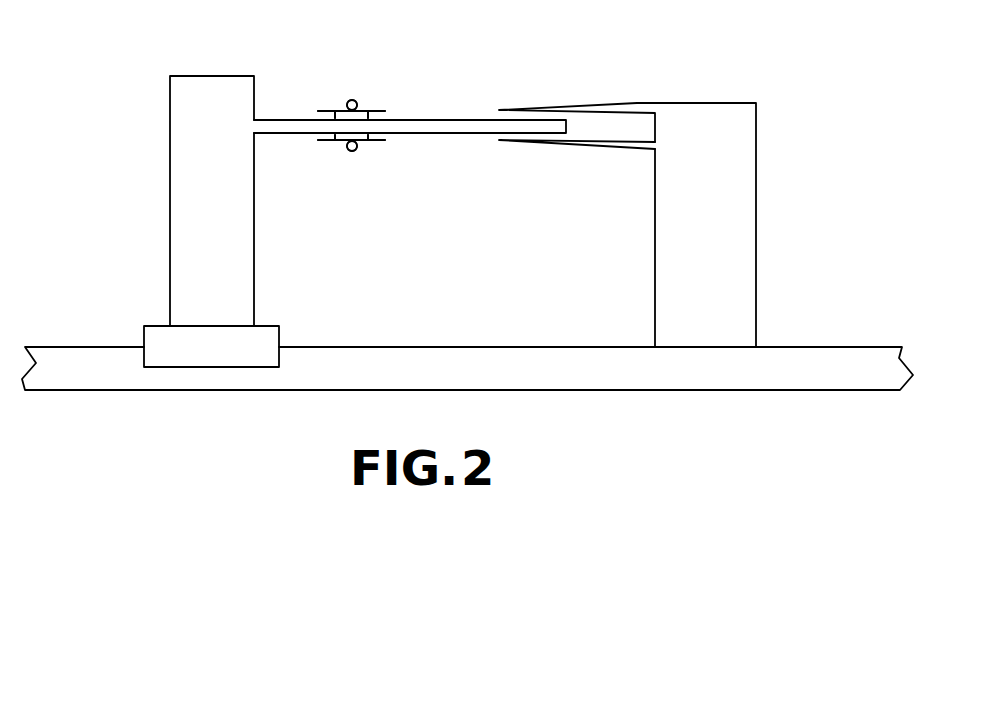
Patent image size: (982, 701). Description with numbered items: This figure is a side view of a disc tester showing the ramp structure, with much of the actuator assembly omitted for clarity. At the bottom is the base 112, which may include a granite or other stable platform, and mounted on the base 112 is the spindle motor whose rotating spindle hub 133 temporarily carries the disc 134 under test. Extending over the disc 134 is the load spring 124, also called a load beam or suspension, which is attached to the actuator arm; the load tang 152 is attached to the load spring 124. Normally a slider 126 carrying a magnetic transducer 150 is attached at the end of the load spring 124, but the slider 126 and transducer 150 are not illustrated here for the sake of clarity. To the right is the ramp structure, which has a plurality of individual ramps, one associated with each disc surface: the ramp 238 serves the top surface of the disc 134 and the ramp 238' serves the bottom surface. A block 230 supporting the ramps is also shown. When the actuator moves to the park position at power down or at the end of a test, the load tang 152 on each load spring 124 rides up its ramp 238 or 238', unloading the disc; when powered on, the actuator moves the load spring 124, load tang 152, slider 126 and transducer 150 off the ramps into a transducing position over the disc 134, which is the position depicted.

The base 112 is at (785, 347).
The spindle hub 133 is at (158, 326).
The disc 134 is at (456, 118).
The magnetic transducer 150 is at (343, 110).
The load tang 152 is at (356, 100).
The slider 126 is at (363, 110).
The load spring 124 is at (372, 142).
The block 230 is at (757, 176).
The ramp 238 is at (600, 90).
The ramp 238' is at (569, 163).